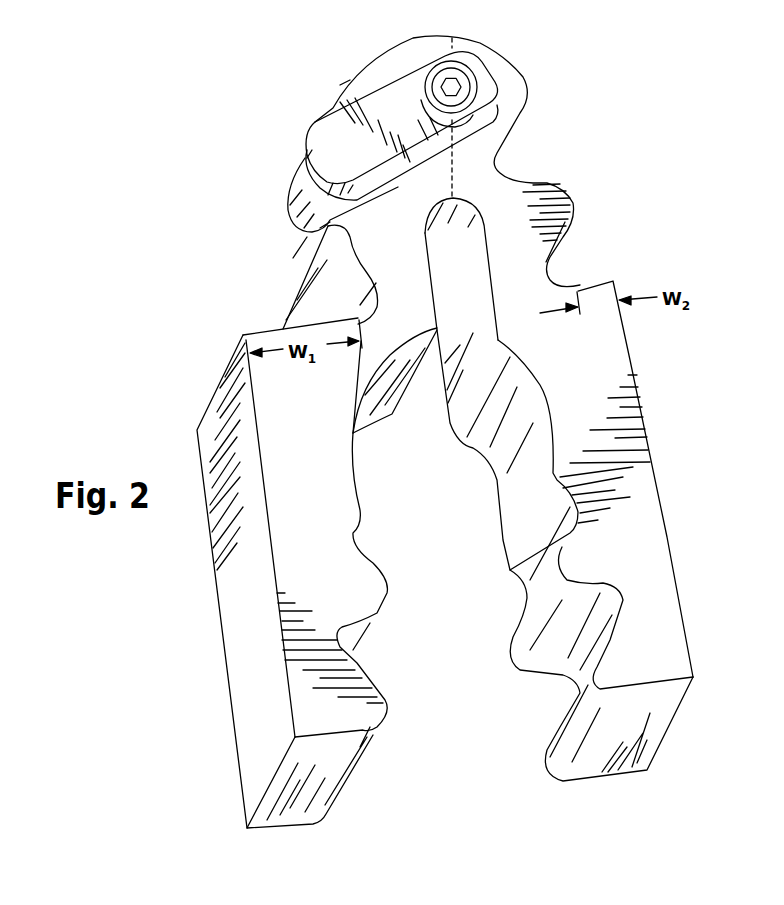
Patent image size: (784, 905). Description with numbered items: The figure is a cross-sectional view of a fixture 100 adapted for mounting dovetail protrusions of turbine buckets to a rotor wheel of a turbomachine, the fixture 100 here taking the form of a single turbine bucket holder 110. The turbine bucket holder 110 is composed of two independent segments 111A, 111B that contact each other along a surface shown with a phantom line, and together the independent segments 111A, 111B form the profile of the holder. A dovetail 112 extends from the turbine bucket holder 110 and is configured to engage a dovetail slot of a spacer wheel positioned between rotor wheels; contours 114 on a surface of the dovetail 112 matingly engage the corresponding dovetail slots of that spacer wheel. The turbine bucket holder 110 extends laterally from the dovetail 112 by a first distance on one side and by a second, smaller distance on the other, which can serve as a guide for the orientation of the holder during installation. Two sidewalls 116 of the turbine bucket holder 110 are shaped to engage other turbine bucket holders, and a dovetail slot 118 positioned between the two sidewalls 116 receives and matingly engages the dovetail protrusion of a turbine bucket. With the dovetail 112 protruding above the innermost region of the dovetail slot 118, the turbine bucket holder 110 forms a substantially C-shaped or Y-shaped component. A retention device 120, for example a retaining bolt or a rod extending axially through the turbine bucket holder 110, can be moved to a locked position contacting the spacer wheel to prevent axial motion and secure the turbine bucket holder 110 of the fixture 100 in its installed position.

The fixture 100 is at (181, 279).
The turbine bucket holder 110 is at (587, 284).
The independent segment 111A is at (267, 334).
The independent segment 111B is at (600, 281).
The dovetail 112 is at (355, 85).
The contours 114 is at (327, 223).
The sidewalls 116 is at (243, 585).
The dovetail slot 118 is at (370, 565).
The retention device 120 is at (416, 85).